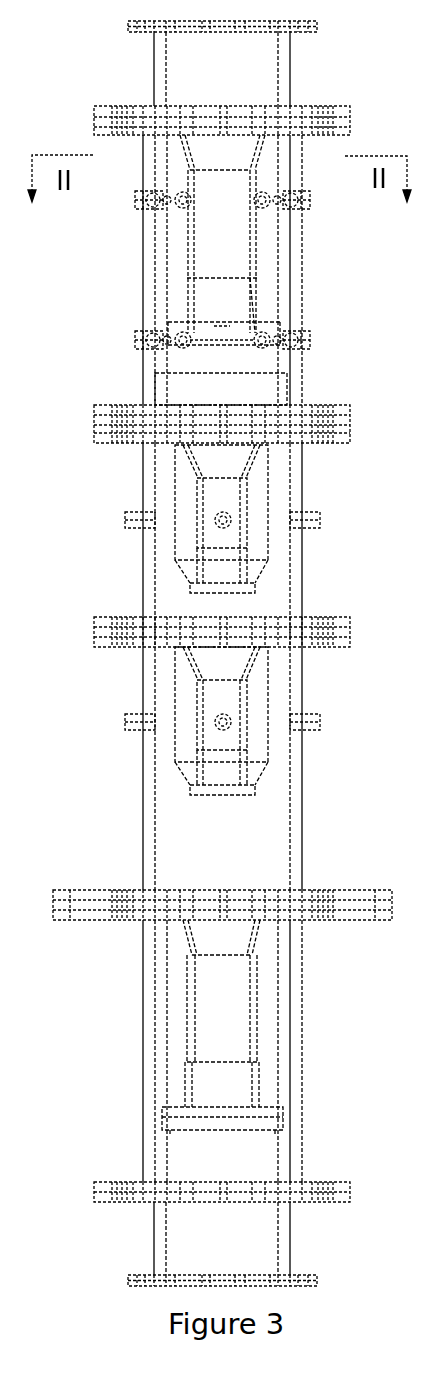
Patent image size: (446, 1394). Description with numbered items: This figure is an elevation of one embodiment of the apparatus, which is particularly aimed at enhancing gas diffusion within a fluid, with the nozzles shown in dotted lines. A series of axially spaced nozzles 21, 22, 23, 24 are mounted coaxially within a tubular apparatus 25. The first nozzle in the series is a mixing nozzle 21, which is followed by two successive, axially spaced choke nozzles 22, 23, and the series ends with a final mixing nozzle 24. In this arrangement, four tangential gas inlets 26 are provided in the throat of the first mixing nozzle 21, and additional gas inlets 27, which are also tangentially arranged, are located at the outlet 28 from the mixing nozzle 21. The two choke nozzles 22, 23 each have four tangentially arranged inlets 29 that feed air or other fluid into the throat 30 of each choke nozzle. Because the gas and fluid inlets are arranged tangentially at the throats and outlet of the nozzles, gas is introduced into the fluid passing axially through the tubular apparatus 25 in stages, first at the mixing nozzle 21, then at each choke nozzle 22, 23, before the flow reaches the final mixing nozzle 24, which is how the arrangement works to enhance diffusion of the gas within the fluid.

The mixing nozzle 21 is at (190, 237).
The choke nozzle 22 is at (197, 492).
The choke nozzle 23 is at (198, 737).
The final mixing nozzle 24 is at (197, 1023).
The tubular apparatus 25 is at (155, 368).
The tangential gas inlets 26 is at (134, 199).
The additional gas inlets 27 is at (134, 340).
The outlet 28 is at (220, 331).
The tangentially arranged inlets 29 is at (135, 520).
The throat 30 is at (198, 500).